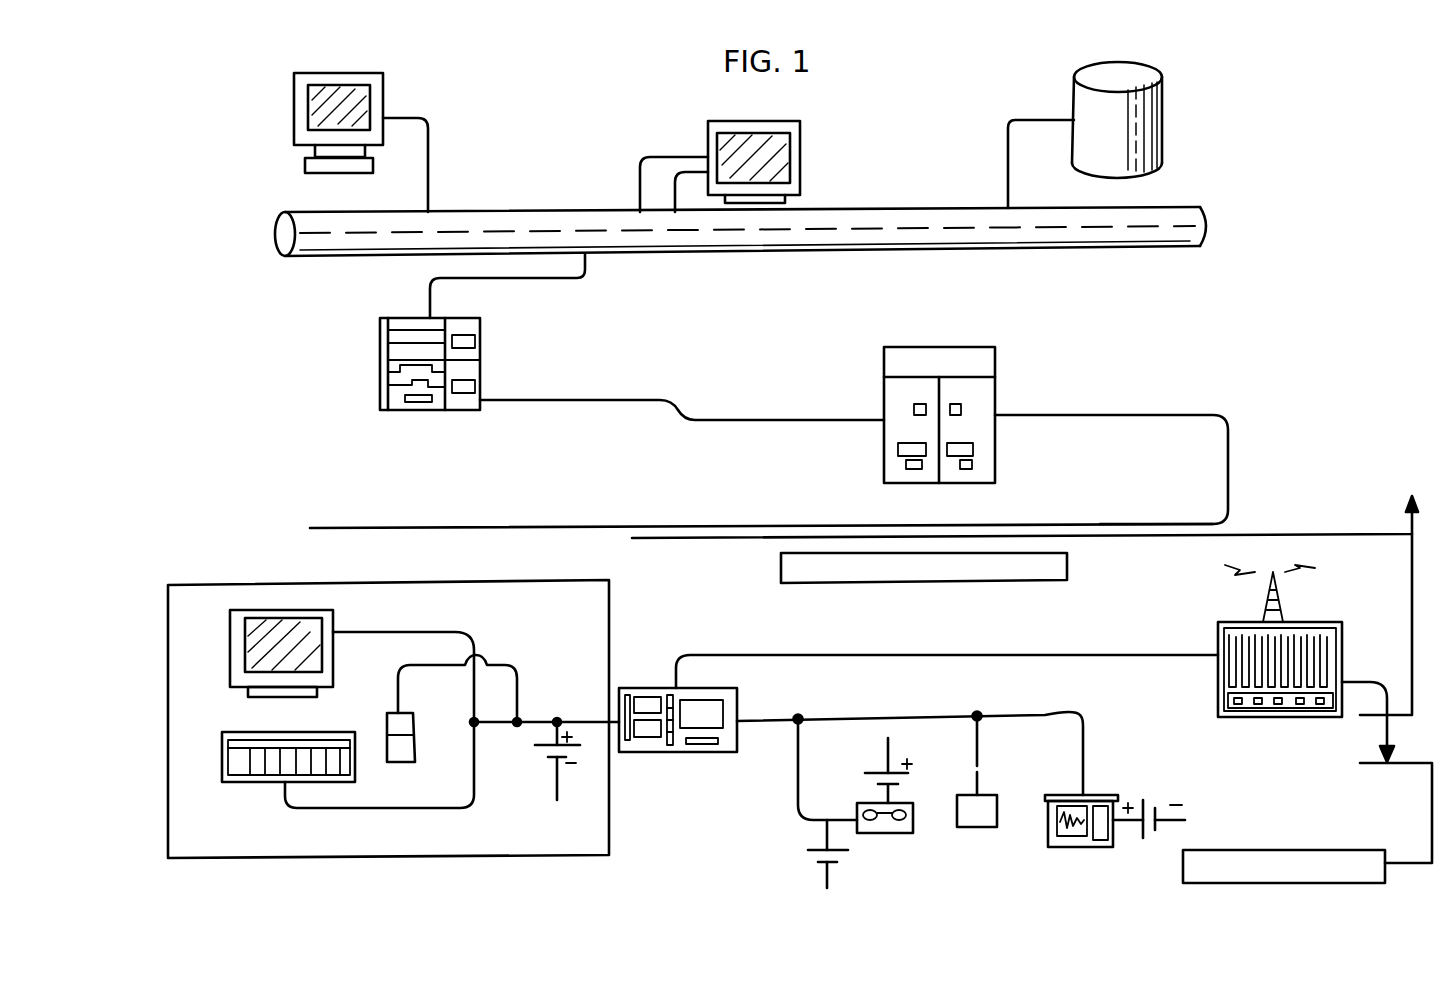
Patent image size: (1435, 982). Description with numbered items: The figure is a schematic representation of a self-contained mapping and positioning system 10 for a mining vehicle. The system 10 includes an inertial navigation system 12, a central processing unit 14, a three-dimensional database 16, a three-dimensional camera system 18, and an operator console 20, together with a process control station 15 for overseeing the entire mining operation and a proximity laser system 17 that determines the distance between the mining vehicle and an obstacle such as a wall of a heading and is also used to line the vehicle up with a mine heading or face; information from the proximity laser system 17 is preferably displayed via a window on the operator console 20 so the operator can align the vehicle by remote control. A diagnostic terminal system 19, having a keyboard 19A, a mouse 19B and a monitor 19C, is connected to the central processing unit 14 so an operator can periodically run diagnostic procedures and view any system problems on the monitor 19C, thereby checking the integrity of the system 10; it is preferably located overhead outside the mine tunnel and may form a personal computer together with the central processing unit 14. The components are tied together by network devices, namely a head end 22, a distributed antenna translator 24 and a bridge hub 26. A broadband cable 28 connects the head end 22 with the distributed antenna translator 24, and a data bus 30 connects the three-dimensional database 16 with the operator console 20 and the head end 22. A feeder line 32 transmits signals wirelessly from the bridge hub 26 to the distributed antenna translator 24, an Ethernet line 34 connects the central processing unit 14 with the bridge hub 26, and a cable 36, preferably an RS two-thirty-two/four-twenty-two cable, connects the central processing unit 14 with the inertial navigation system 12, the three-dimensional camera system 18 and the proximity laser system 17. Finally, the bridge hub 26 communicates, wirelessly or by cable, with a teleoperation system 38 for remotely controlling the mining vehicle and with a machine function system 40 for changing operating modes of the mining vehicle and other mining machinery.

The self-contained mapping and positioning system 10 is at (520, 102).
The inertial navigation system 12 is at (1070, 848).
The central processing unit 14 is at (700, 752).
The process control station 15 is at (703, 133).
The three-dimensional database 16 is at (1140, 136).
The proximity laser system 17 is at (980, 827).
The three-dimensional camera system 18 is at (895, 835).
The diagnostic terminal system 19 is at (608, 625).
The keyboard 19A is at (240, 783).
The mouse 19B is at (400, 762).
The monitor 19C is at (333, 618).
The operator console 20 is at (294, 103).
The head end 22 is at (480, 367).
The distributed antenna translator 24 is at (982, 362).
The bridge hub 26 is at (1215, 640).
The broadband cable 28 is at (718, 420).
The data bus 30 is at (838, 215).
The feeder line 32 is at (688, 527).
The Ethernet line 34 is at (815, 657).
The cable 36 is at (1088, 747).
The teleoperation system 38 is at (895, 570).
The machine function system 40 is at (1258, 850).